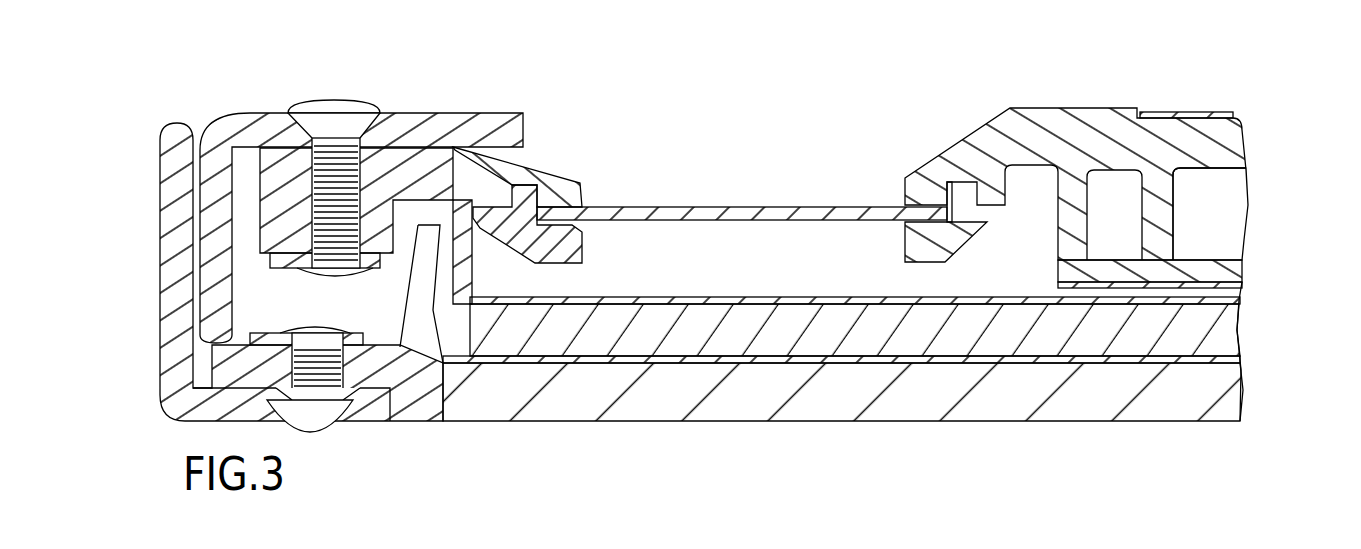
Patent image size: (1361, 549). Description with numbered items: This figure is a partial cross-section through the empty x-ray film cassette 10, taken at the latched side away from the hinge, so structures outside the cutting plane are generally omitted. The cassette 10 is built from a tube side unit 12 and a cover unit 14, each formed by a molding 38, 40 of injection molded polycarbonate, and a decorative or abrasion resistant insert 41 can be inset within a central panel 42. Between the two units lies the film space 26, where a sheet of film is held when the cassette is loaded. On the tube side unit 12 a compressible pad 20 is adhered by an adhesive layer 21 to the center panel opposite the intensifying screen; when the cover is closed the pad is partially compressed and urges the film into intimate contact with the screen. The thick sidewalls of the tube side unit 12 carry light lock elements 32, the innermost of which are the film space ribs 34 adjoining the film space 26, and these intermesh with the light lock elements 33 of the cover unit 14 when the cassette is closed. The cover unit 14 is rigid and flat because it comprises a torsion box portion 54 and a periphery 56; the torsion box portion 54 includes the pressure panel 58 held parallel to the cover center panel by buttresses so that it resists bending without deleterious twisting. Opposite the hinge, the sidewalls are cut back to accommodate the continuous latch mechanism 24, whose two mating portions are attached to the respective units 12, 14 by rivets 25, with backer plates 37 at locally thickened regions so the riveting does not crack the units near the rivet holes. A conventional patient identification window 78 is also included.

The film cassette 10 is at (737, 245).
The tube side unit 12 is at (843, 423).
The cover unit 14 is at (850, 159).
The compressible pad 20 is at (1250, 328).
The adhesive layer 21 is at (1183, 365).
The latch mechanism 24 is at (160, 128).
The rivet 25 is at (333, 322).
The film space 26 is at (897, 292).
The light lock element 32 is at (370, 179).
The light lock element 33 is at (434, 314).
The film space rib 34 is at (452, 200).
The backer plate 37 is at (268, 332).
The molding 38 is at (843, 423).
The molding 40 is at (850, 159).
The insert 41 is at (1200, 112).
The central panel 42 is at (810, 423).
The torsion box portion 54 is at (1117, 108).
The periphery 56 is at (540, 165).
The pressure panel 58 is at (1212, 232).
The patient identification window 78 is at (847, 192).